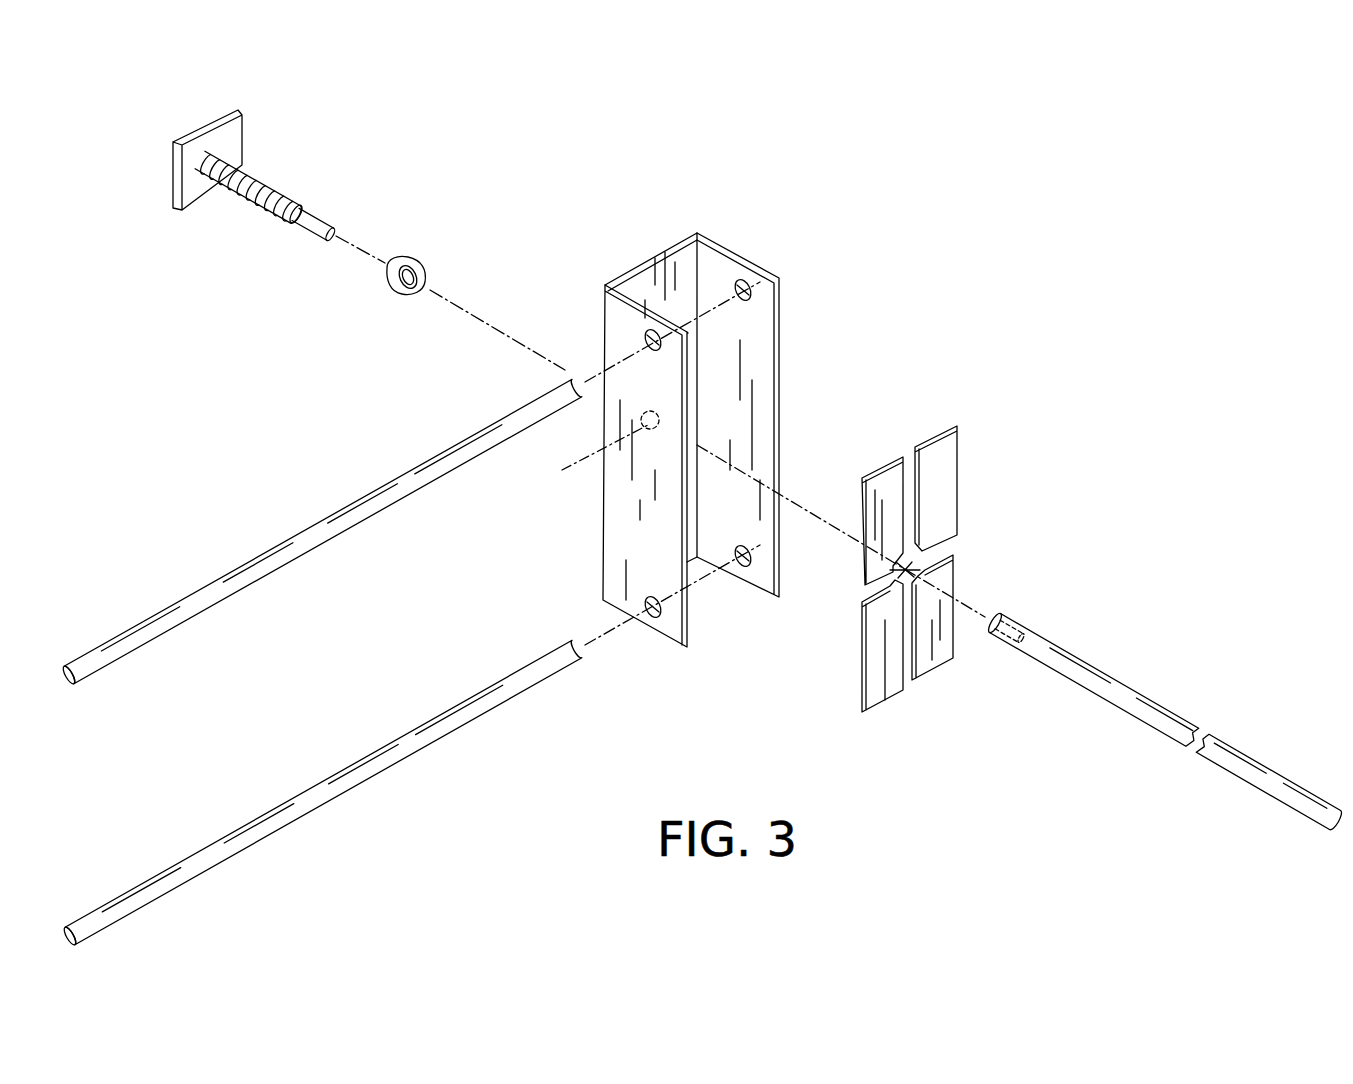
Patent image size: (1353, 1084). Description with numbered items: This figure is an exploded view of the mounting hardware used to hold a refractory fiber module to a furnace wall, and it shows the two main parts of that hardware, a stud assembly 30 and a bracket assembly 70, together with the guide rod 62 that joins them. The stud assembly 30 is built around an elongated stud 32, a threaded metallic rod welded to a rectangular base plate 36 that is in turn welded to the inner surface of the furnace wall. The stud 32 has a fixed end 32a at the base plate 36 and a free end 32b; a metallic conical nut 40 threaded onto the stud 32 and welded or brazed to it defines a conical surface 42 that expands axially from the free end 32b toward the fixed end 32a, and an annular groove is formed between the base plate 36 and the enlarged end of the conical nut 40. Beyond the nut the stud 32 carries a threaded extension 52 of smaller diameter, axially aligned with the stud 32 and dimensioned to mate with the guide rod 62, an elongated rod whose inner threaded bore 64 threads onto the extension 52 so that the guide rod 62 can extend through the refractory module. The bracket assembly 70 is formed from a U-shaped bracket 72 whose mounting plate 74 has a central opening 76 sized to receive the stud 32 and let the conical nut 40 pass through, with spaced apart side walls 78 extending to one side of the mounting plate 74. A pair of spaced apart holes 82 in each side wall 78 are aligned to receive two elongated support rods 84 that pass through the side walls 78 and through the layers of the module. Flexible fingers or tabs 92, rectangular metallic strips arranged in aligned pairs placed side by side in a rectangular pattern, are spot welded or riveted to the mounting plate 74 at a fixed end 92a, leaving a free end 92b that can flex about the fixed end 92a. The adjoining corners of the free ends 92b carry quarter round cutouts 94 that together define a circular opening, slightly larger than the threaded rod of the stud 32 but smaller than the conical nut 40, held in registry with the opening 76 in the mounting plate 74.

The stud assembly 30 is at (336, 208).
The stud 32 is at (230, 216).
The fixed end 32a is at (172, 178).
The free end 32b is at (297, 220).
The base plate 36 is at (230, 130).
The conical nut 40 is at (404, 255).
The conical surface 42 is at (392, 280).
The threaded extension 52 is at (307, 213).
The guide rod 62 is at (1163, 707).
The inner threaded bore 64 is at (1010, 617).
The bracket assembly 70 is at (857, 190).
The U-shaped bracket 72 is at (754, 438).
The mounting plate 74 is at (648, 282).
The central opening 76 is at (592, 449).
The side walls 78 is at (765, 397).
The holes 82 is at (645, 340).
The support rods 84 is at (180, 610).
The flexible fingers or tabs 92 is at (926, 569).
The fixed end 92a is at (877, 468).
The free end 92b is at (925, 562).
The quarter round cutouts 94 is at (898, 568).